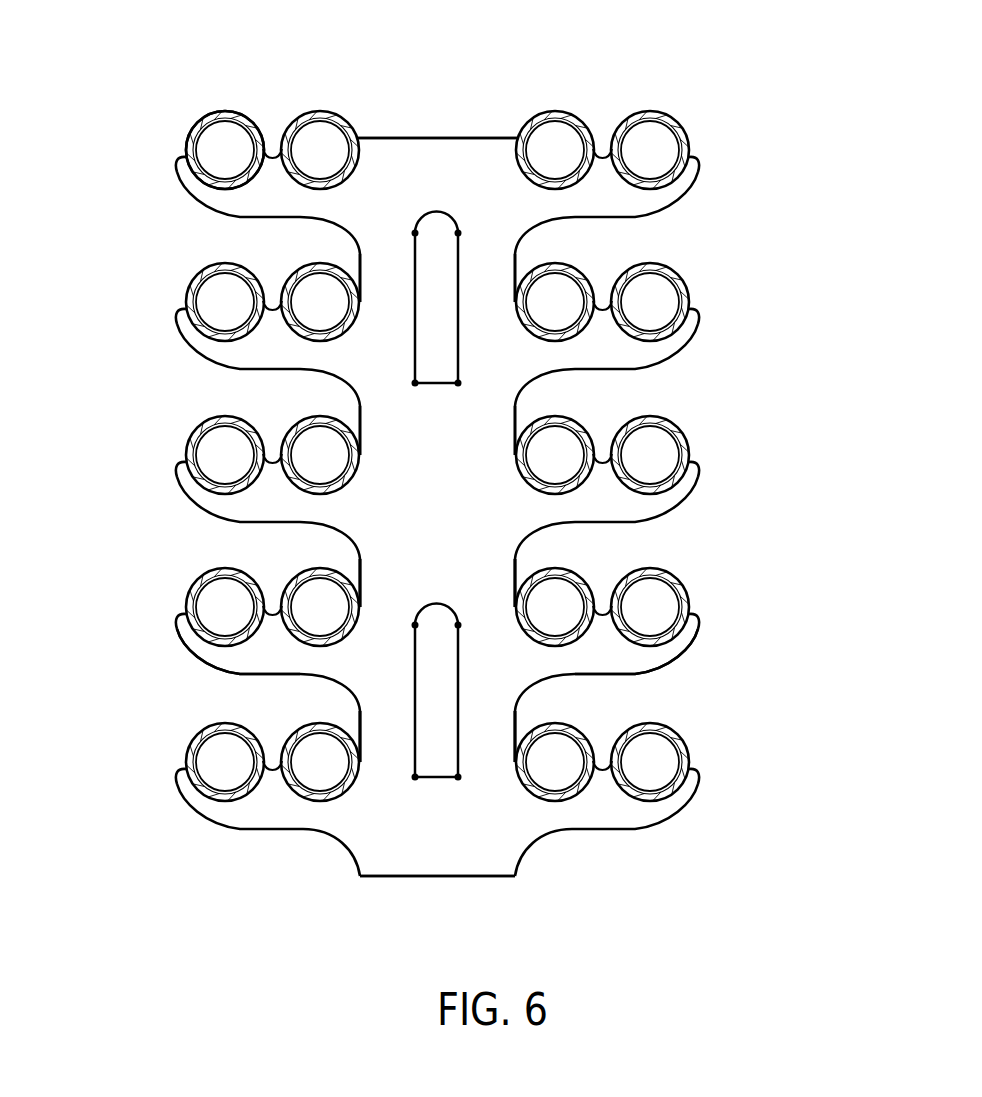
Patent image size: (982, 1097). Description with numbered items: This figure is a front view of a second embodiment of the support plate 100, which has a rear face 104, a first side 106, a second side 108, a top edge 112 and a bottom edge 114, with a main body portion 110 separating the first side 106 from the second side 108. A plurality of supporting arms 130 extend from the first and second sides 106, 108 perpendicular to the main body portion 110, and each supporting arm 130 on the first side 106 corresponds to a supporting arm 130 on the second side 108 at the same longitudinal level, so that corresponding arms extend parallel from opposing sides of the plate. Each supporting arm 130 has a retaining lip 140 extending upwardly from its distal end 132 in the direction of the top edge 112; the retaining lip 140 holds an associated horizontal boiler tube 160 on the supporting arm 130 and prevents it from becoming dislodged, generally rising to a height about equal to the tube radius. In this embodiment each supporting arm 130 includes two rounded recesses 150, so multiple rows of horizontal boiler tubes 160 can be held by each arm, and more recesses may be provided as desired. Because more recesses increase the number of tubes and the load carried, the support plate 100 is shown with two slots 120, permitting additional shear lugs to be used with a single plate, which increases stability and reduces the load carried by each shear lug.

The support plate 100 is at (735, 116).
The rear face 104 is at (443, 587).
The first side 106 is at (495, 347).
The second side 108 is at (380, 347).
The main body portion 110 is at (435, 530).
The top edge 112 is at (428, 138).
The bottom edge 114 is at (390, 878).
The slot 120 is at (437, 273).
The supporting arm 130 is at (250, 668).
The distal end 132 is at (197, 658).
The retaining lip 140 is at (178, 616).
The rounded recess 150 is at (232, 800).
The horizontal boiler tube 160 is at (190, 136).